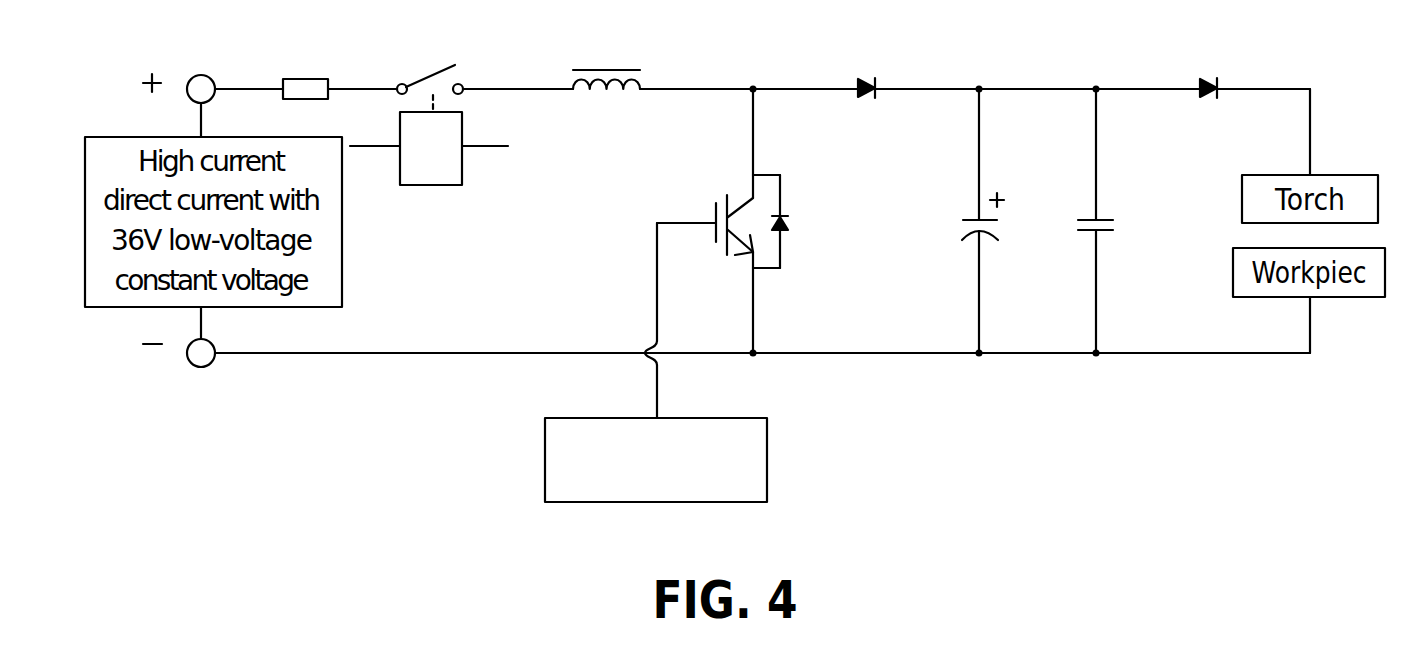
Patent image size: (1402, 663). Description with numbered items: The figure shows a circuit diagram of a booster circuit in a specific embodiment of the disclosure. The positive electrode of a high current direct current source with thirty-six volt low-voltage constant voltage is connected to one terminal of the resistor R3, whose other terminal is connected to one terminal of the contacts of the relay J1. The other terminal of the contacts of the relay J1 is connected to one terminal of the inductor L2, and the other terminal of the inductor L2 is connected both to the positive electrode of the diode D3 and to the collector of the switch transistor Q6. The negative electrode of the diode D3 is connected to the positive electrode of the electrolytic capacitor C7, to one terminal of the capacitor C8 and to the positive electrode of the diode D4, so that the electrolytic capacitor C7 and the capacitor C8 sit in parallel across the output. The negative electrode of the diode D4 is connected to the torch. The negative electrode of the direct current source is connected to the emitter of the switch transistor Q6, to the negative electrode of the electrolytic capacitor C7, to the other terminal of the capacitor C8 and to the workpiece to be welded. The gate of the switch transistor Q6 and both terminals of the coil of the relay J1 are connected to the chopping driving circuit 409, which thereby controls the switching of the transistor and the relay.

The resistor R3 is at (305, 59).
The relay J1 is at (429, 137).
The inductor L2 is at (606, 107).
The switch transistor Q6 is at (716, 253).
The diode D3 is at (868, 57).
The electrolytic capacitor C7 is at (961, 221).
The capacitor C8 is at (1073, 221).
The diode D4 is at (1209, 57).
The chopping driving circuit 409 is at (748, 477).